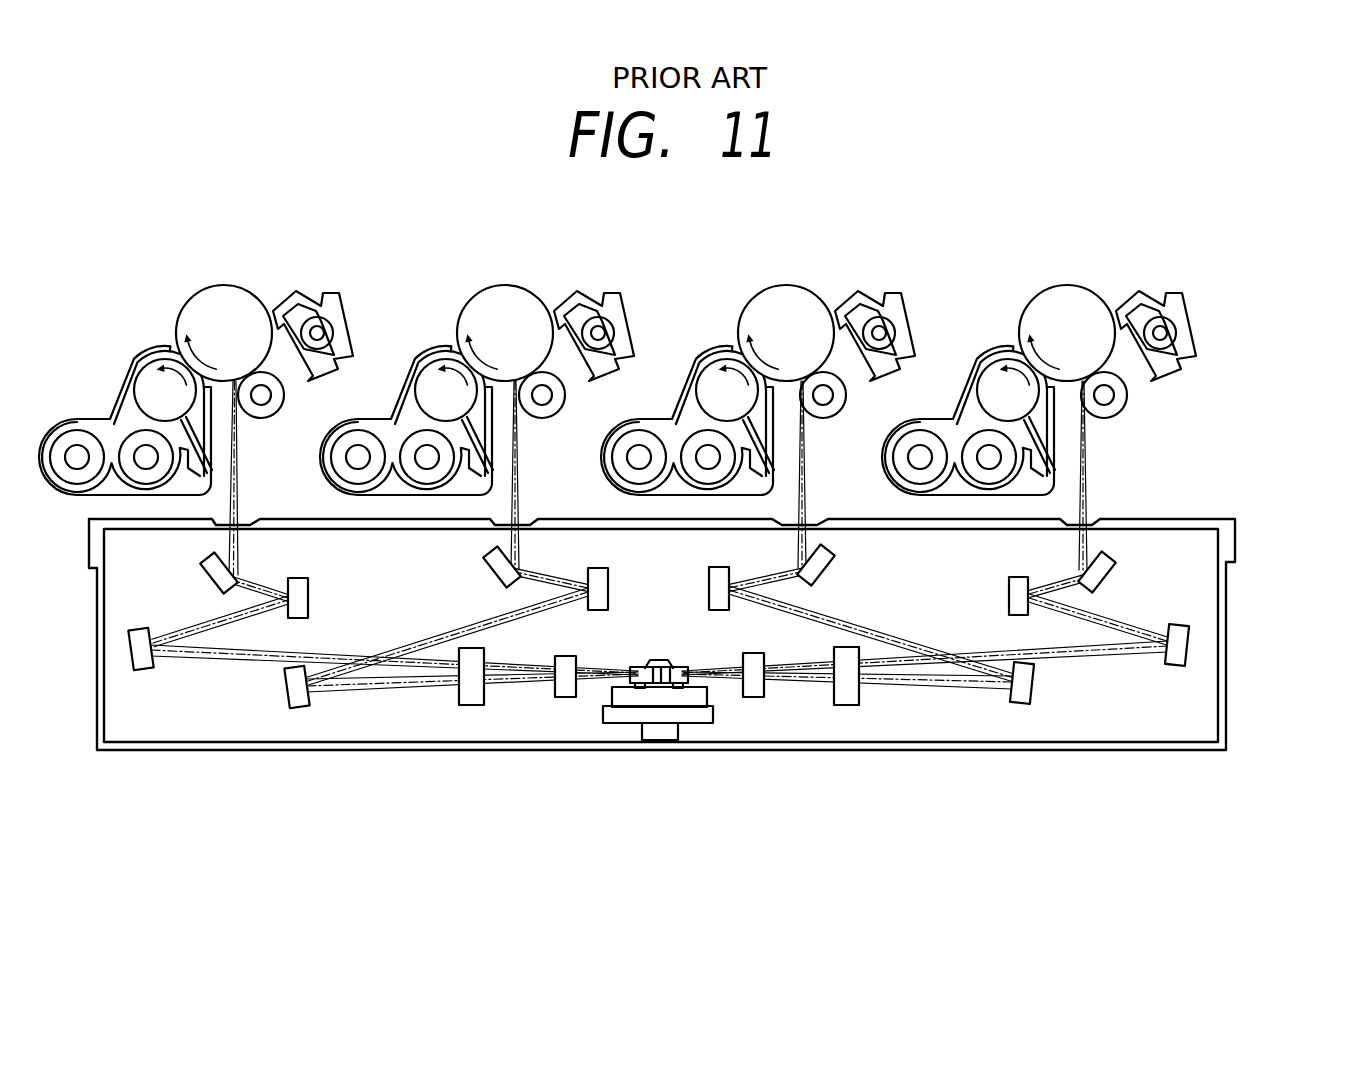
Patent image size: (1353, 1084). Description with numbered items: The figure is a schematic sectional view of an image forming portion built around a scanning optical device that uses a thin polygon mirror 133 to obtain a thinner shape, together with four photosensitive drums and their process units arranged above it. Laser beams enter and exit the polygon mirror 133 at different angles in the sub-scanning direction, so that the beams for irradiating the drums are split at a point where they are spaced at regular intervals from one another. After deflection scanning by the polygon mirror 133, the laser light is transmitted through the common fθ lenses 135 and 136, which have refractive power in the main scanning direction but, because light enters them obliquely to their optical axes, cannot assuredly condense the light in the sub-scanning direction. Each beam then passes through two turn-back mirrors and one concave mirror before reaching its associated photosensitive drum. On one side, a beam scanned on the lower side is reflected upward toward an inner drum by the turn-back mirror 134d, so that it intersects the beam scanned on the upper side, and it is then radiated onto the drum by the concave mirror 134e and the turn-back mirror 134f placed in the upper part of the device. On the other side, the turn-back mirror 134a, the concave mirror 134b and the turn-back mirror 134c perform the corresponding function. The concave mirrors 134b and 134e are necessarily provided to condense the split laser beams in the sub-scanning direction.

The polygon mirror 133 is at (657, 687).
The turn-back mirror 134a is at (1188, 647).
The concave mirror 134b is at (1018, 578).
The turn-back mirror 134c is at (1115, 555).
The turn-back mirror 134d is at (1033, 688).
The concave mirror 134e is at (710, 593).
The turn-back mirror 134f is at (830, 547).
The fθ lens 135 is at (764, 690).
The fθ lens 136 is at (858, 692).